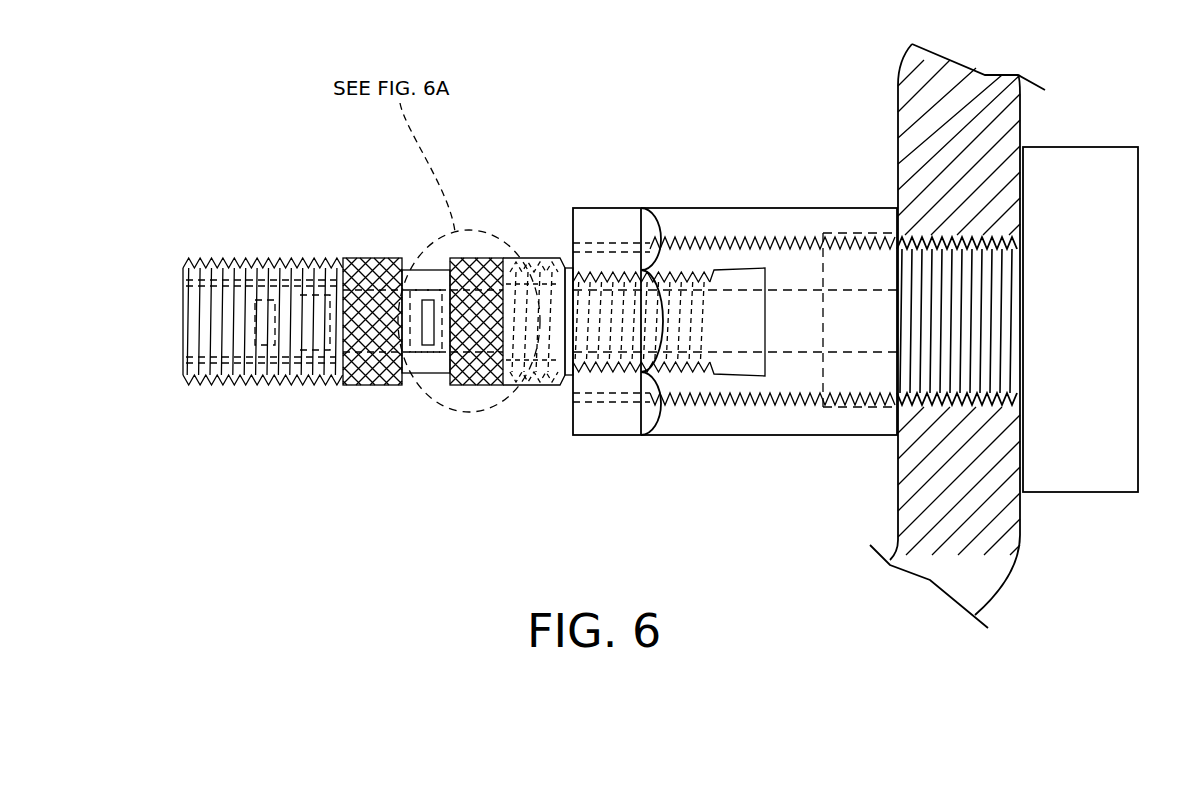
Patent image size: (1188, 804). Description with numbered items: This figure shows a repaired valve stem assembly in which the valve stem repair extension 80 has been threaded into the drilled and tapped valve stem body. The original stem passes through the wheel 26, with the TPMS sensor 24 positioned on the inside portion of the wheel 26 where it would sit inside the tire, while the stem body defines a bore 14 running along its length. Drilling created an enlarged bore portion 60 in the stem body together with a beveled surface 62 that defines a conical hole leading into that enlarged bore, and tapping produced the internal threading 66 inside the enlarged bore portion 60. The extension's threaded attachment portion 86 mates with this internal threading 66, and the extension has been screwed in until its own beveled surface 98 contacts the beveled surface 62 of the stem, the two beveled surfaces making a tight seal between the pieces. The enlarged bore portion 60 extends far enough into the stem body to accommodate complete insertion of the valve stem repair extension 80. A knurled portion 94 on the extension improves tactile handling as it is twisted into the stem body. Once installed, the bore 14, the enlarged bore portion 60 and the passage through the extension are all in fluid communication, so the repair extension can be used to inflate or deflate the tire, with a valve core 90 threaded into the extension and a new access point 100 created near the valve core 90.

The access point 100 is at (178, 400).
The valve core 90 is at (185, 322).
The valve stem repair extension 80 is at (352, 236).
The beveled surface 98 is at (455, 390).
The beveled surface 62 is at (528, 385).
The knurled portion 94 is at (512, 320).
The enlarged bore portion 60 is at (745, 322).
The internal threading 66 is at (733, 300).
The threaded attachment portion 86 is at (708, 402).
The bore 14 is at (858, 330).
The wheel 26 is at (897, 468).
The TPMS sensor 24 is at (1084, 309).